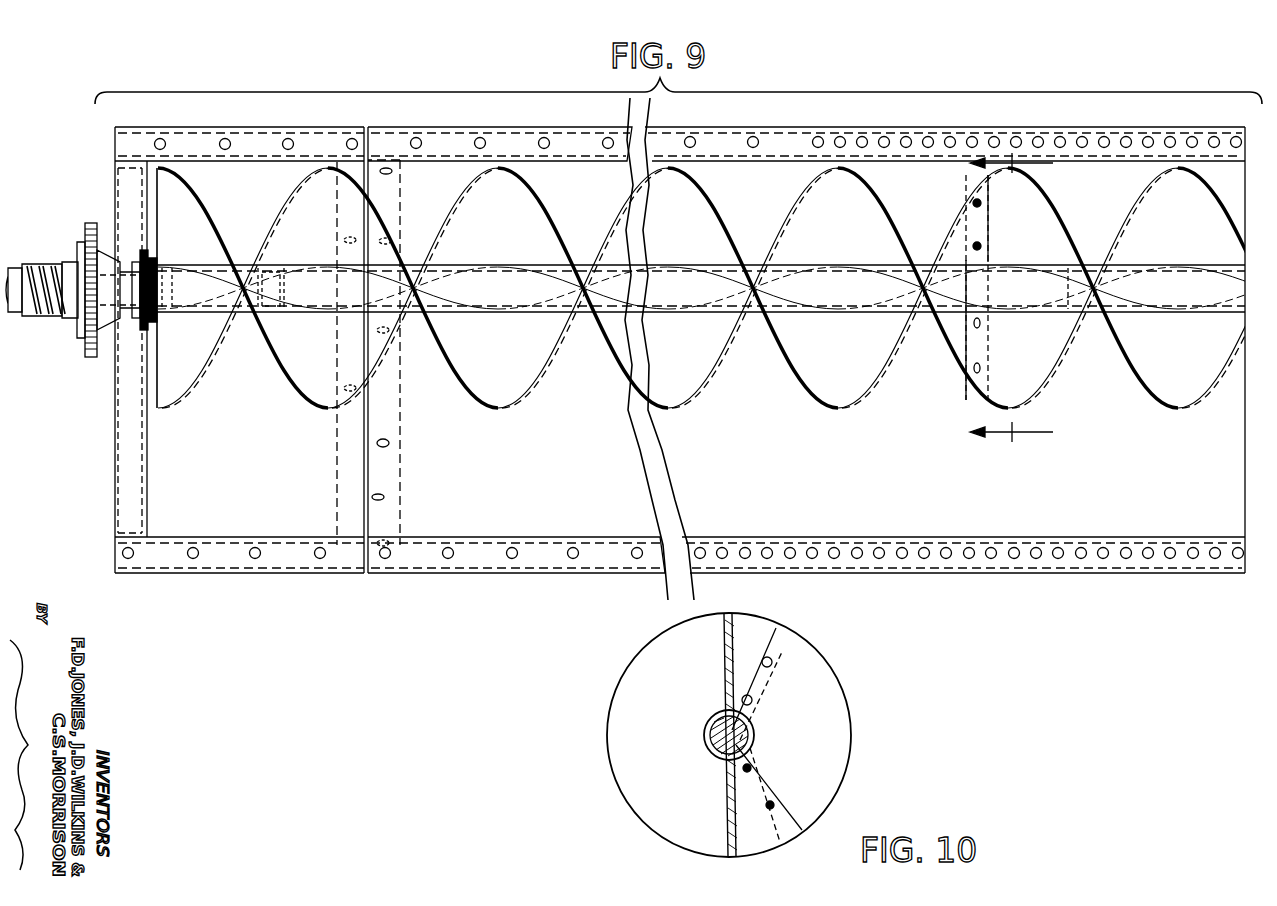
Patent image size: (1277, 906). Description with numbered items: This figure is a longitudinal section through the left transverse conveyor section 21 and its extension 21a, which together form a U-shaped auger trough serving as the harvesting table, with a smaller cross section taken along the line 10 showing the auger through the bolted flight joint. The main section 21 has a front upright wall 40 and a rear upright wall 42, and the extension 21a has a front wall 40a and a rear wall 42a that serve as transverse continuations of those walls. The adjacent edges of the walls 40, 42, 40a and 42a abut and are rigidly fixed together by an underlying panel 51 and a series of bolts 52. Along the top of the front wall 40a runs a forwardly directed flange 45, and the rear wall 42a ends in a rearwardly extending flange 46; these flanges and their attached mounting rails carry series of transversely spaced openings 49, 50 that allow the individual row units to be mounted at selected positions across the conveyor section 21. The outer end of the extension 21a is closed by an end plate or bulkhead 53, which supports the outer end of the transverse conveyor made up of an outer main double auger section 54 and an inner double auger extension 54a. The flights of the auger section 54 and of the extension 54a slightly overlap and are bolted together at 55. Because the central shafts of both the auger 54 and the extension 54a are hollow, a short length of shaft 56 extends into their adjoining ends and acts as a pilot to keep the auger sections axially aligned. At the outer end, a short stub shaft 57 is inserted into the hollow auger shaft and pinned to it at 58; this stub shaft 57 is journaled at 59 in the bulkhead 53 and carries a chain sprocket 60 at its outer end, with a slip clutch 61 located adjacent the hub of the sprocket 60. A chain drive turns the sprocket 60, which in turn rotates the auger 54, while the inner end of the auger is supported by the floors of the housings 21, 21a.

In FIG. 9, the section line 10— 10 is at (1024, 298).
In FIG. 9, the left transverse section 21 is at (552, 525).
In FIG. 9, the extension 21a is at (228, 556).
In FIG. 9, the front upright wall 40 is at (761, 194).
In FIG. 9, the front wall 40a is at (237, 180).
In FIG. 9, the rear upright wall 42 is at (806, 505).
In FIG. 9, the rear wall 42a is at (275, 520).
In FIG. 9, the forwardly directed flange 45 is at (527, 137).
In FIG. 9, the rearwardly extending flange 46 is at (607, 556).
In FIG. 9, the openings 49 is at (478, 140).
In FIG. 9, the openings 50 is at (510, 560).
In FIG. 9, the underlying panel 51 is at (402, 512).
In FIG. 9, the bolts 52 is at (380, 496).
In FIG. 9, the end plate or bulkhead 53 is at (143, 340).
In FIG. 9, the outer main double auger section 54 is at (300, 380).
In FIG. 10, the outer main double auger section 54 is at (833, 729).
In FIG. 9, the inner double auger extension 54a is at (1053, 376).
In FIG. 10, the inner double auger extension 54a is at (757, 630).
In FIG. 9, the bolts 55 is at (982, 245).
In FIG. 10, the bolts 55 is at (770, 668).
In FIG. 9, the short length of shaft 56 is at (1059, 310).
In FIG. 10, the short length of shaft 56 is at (716, 745).
In FIG. 9, the short stub shaft 57 is at (216, 246).
In FIG. 9, the pin 58 is at (277, 262).
In FIG. 9, the journal 59 is at (150, 322).
In FIG. 9, the chain sprocket 60 is at (88, 226).
In FIG. 9, the slip clutch 61 is at (66, 326).